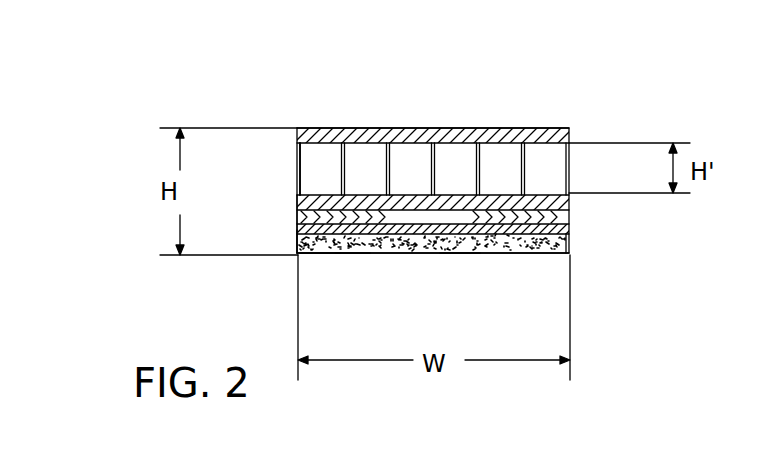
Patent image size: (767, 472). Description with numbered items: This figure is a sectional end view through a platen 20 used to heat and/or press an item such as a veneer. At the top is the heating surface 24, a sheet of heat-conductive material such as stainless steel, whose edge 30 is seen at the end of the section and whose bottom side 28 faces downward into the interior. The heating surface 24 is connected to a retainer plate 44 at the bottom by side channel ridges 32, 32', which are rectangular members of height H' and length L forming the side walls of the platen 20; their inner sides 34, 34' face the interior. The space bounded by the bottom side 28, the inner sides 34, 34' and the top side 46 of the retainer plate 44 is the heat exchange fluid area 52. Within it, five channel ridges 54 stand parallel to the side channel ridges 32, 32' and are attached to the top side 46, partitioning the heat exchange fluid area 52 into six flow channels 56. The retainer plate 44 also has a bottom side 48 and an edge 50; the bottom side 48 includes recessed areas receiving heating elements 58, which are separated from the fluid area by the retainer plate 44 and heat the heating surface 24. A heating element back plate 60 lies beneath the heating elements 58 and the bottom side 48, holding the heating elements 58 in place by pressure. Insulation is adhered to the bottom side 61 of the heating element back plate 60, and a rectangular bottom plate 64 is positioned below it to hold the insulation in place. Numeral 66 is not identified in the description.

The platen 20 is at (548, 118).
The heating surface 24 is at (297, 128).
The bottom side of heating surface 28 is at (300, 150).
The edge of heating surface 30 is at (569, 138).
The side channel ridge 32 is at (250, 180).
The side channel ridge 32' is at (602, 169).
The inner side of side channel ridge 34 is at (391, 229).
The inner side of side channel ridge 34' is at (570, 237).
The retainer plate 44 is at (298, 218).
The top side of retainer plate 46 is at (320, 256).
The bottom side of retainer plate 48 is at (352, 256).
The edge of retainer plate 50 is at (569, 198).
The heat exchange fluid area 52 is at (300, 163).
The channel ridge 54 is at (330, 140).
The flow channel 56 is at (300, 128).
The heating element 58 is at (387, 255).
The heating element back plate 60 is at (489, 256).
The bottom side of heating element back plate 61 is at (571, 270).
The bottom plate 64 is at (462, 256).
The corner 66 is at (298, 240).